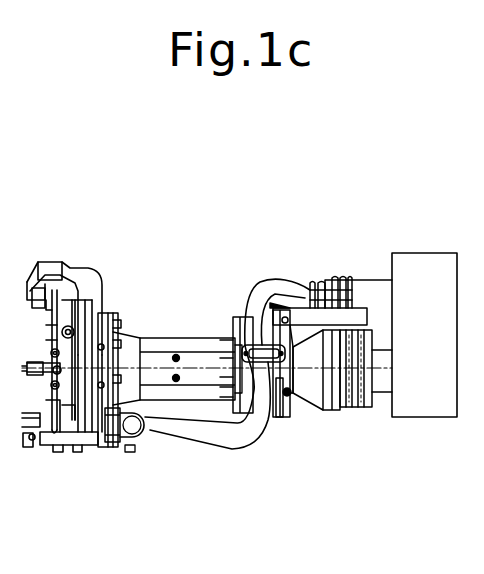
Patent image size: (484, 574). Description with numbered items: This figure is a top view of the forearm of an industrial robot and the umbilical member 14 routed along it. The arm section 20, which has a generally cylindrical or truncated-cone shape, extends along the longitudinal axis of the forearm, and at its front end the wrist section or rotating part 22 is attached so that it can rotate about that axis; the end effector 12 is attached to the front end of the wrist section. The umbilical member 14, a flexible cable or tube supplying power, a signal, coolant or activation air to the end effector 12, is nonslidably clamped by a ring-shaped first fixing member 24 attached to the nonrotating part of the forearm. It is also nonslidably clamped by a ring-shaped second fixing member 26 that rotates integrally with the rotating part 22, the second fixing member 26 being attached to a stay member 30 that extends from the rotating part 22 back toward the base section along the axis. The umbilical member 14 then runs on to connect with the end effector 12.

The end effector 12 is at (433, 405).
The umbilical member 14 is at (222, 443).
The arm section 20 is at (153, 343).
The rotating part 22 is at (357, 406).
The first fixing member 24 is at (160, 436).
The second fixing member 26 is at (255, 345).
The stay member 30 is at (355, 313).